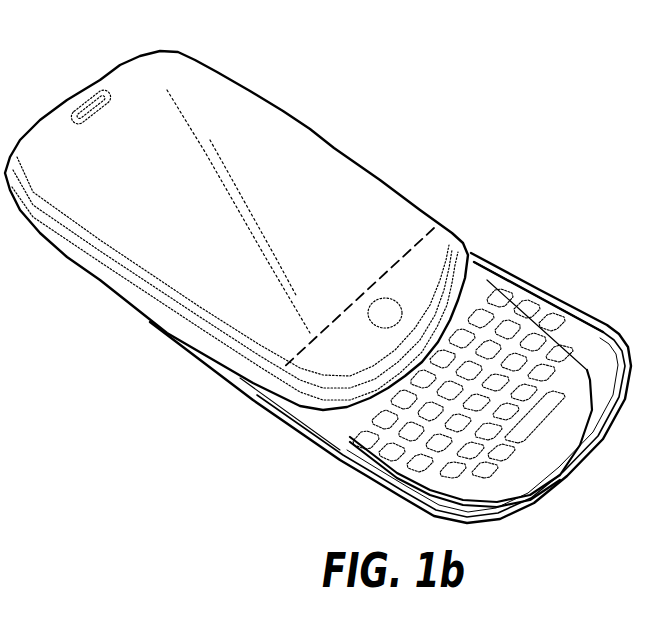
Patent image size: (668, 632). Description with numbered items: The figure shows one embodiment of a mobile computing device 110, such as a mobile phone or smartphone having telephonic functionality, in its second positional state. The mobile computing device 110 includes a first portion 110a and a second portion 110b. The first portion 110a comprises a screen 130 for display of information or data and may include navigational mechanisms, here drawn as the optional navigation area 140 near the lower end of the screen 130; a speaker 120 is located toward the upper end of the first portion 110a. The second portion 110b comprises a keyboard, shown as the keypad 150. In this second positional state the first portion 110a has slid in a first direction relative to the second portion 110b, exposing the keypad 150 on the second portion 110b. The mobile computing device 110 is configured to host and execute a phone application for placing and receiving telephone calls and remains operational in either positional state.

The mobile computing device 110 is at (292, 73).
The first portion 110a is at (307, 130).
The second portion 110b is at (280, 423).
The speaker 120 is at (91, 92).
The screen 130 is at (354, 181).
The navigation area 140 is at (360, 323).
The keypad 150 is at (567, 332).